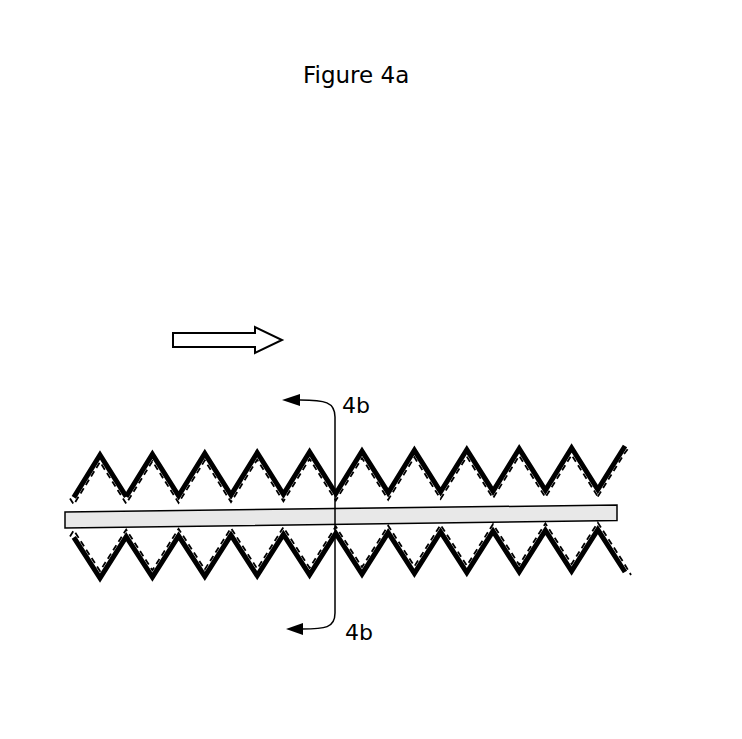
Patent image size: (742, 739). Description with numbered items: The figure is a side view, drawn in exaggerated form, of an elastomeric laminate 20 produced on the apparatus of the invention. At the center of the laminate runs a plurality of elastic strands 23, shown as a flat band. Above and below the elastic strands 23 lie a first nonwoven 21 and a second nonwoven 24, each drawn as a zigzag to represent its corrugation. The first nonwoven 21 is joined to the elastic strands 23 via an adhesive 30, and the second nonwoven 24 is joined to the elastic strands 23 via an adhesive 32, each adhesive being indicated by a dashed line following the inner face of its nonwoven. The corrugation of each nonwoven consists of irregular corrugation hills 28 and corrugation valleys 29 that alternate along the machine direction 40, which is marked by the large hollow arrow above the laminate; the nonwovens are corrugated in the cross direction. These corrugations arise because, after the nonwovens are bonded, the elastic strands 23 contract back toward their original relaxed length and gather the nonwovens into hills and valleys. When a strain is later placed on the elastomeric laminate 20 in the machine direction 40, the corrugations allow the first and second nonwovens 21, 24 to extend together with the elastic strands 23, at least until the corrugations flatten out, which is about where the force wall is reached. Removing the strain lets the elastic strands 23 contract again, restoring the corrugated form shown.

The elastomeric laminate 20 is at (440, 424).
The first nonwoven 21 is at (522, 447).
The elastic strands 23 is at (618, 506).
The second nonwoven 24 is at (468, 575).
The corrugation hills 28 is at (98, 453).
The corrugation valleys 29 is at (127, 490).
The adhesive 30 is at (636, 448).
The adhesive 32 is at (634, 571).
The machine direction 40 is at (203, 330).